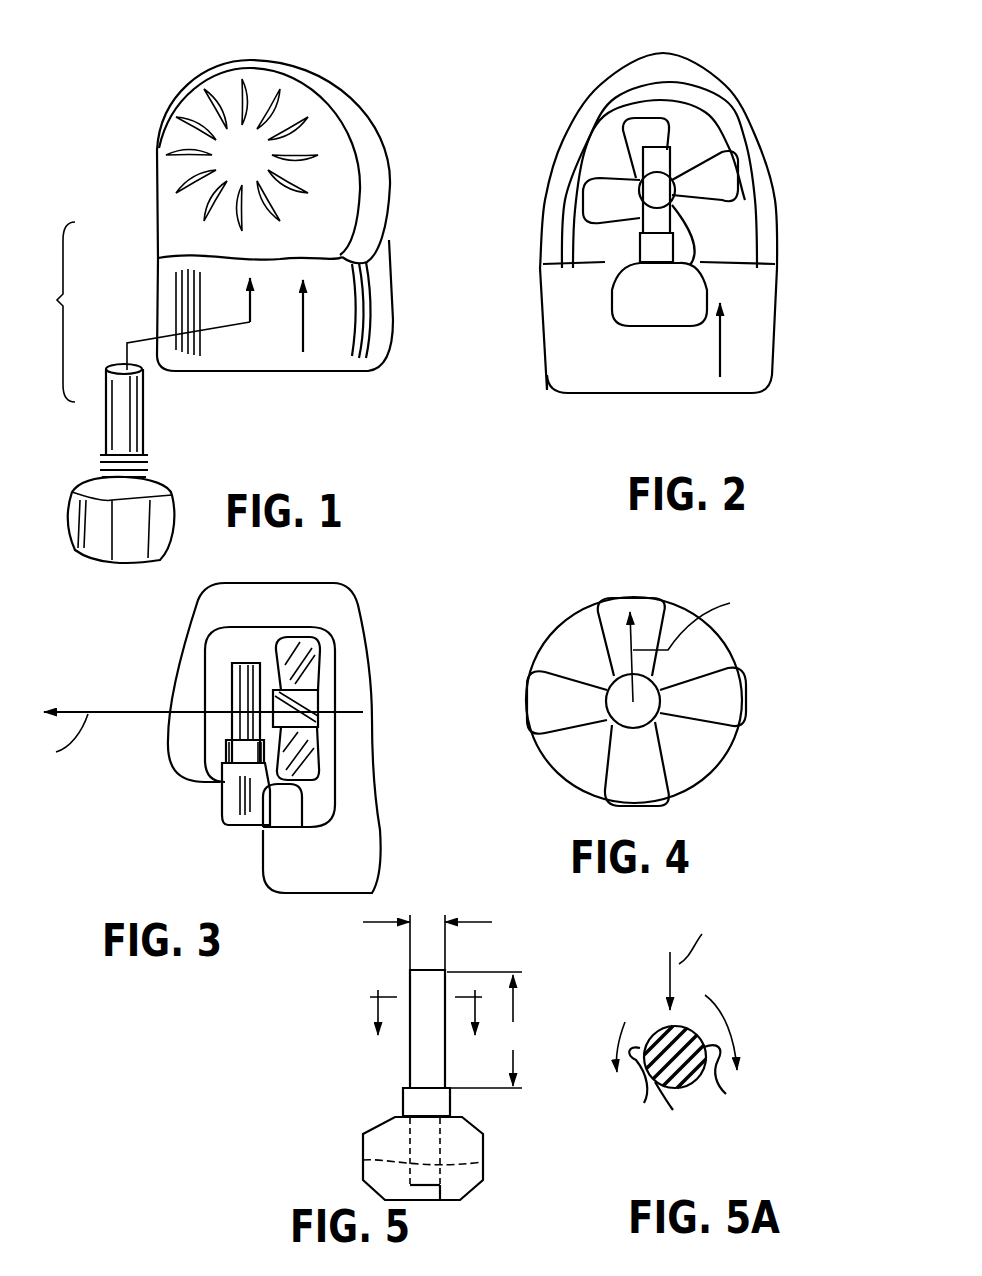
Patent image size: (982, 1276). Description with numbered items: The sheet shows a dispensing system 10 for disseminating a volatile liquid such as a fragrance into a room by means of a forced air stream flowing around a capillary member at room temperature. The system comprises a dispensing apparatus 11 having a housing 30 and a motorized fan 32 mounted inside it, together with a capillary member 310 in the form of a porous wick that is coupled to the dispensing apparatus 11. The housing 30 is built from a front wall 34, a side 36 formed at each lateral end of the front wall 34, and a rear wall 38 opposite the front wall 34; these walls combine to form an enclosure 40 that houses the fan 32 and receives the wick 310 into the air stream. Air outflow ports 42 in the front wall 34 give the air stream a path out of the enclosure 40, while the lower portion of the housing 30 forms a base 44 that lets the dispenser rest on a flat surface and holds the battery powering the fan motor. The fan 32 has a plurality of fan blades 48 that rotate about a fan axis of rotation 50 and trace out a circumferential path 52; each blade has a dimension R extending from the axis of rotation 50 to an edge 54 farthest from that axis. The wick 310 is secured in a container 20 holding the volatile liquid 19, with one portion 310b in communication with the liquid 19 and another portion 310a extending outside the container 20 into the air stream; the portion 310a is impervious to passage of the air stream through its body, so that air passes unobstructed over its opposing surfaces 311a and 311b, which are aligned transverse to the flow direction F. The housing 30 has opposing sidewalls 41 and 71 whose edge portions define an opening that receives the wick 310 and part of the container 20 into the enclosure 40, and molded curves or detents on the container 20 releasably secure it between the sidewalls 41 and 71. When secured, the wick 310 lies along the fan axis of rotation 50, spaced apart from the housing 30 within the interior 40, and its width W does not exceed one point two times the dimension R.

In FIG. 1, the dispensing system 10 is at (51, 312).
In FIG. 1, the dispensing apparatus 11 is at (190, 87).
In FIG. 5, the volatile liquid 19 is at (452, 1186).
In FIG. 1, the container 20 is at (100, 545).
In FIG. 3, the container 20 is at (233, 829).
In FIG. 5, the container 20 is at (374, 1156).
In FIG. 1, the housing 30 is at (402, 302).
In FIG. 2, the housing 30 is at (778, 338).
In FIG. 3, the housing 30 is at (382, 836).
In FIG. 2, the motorized fan 32 is at (704, 156).
In FIG. 3, the motorized fan 32 is at (307, 632).
In FIG. 1, the front wall 34 is at (338, 167).
In FIG. 3, the front wall 34 is at (230, 673).
In FIG. 1, the side 36 is at (155, 183).
In FIG. 2, the side 36 is at (542, 226).
In FIG. 3, the rear wall 38 is at (365, 640).
In FIG. 2, the enclosure 40 is at (688, 108).
In FIG. 3, the enclosure 40 is at (259, 644).
In FIG. 3, the sidewall 41 is at (221, 785).
In FIG. 1, the air outflow ports 42 is at (212, 105).
In FIG. 1, the base 44 is at (285, 372).
In FIG. 2, the base 44 is at (652, 396).
In FIG. 2, the fan blades 48 is at (713, 181).
In FIG. 3, the fan blades 48 is at (330, 752).
In FIG. 4, the fan blades 48 is at (718, 702).
In FIG. 3, the fan axis of rotation 50 is at (152, 715).
In FIG. 4, the fan axis of rotation 50 is at (635, 704).
In FIG. 3, the circumferential path / edge portion 52 is at (240, 818).
In FIG. 4, the circumferential path / edge portion 52 is at (740, 732).
In FIG. 3, the edge / edge portion 54 is at (292, 834).
In FIG. 4, the edge / edge portion 54 is at (628, 602).
In FIG. 3, the sidewall 71 is at (258, 840).
In FIG. 1, the capillary member 310 is at (150, 392).
In FIG. 3, the capillary member 310 is at (200, 668).
In FIG. 5, the capillary member 310 is at (452, 980).
In FIG. 1, the portion of wick body 310a is at (122, 406).
In FIG. 2, the portion of wick body 310a is at (650, 222).
In FIG. 3, the portion of wick body 310a is at (240, 691).
In FIG. 5, the portion of wick body 310a is at (416, 1066).
In FIG. 5A, the portion of wick body 310a is at (668, 1092).
In FIG. 5, the portion of wick 310b is at (442, 1136).
In FIG. 5A, the opposing surface 311a is at (645, 1105).
In FIG. 5A, the opposing surface 311b is at (722, 1090).